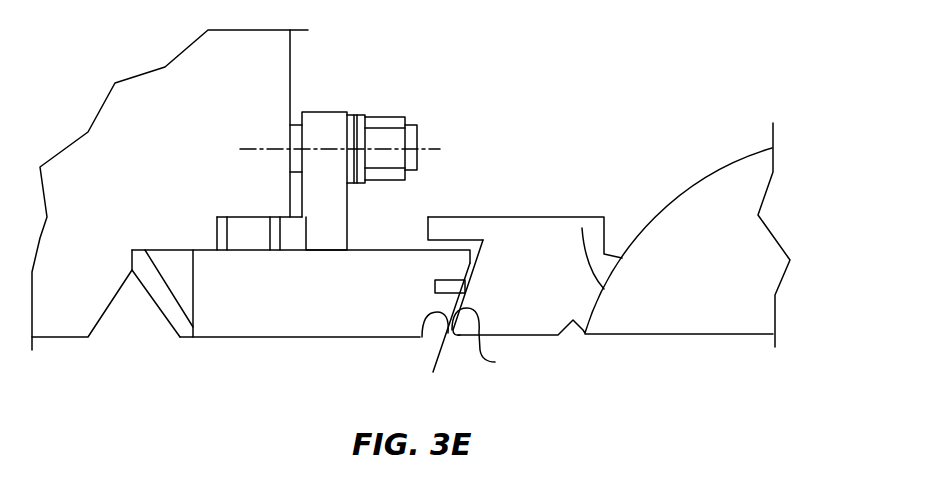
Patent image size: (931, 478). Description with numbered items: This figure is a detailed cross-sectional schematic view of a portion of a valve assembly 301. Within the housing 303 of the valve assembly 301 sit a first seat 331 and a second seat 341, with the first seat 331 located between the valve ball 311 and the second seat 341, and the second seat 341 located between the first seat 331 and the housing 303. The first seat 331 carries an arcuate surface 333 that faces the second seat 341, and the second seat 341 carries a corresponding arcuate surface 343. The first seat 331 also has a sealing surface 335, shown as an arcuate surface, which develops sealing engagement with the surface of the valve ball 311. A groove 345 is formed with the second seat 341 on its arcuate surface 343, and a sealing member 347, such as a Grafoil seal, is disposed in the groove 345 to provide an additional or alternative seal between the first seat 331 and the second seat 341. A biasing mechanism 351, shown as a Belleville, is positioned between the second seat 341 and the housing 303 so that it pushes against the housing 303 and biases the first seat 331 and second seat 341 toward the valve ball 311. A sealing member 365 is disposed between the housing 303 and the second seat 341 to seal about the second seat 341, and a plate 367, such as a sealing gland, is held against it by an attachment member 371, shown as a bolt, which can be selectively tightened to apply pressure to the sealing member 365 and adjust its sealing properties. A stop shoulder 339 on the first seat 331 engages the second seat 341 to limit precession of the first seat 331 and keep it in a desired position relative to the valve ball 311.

The valve assembly 301 is at (600, 92).
The housing 303 is at (194, 119).
The valve ball 311 is at (731, 280).
The first seat 331 is at (558, 280).
The arcuate surface 333 is at (495, 362).
The sealing surface 335 is at (582, 228).
The stop shoulder 339 is at (452, 223).
The second seat 341 is at (343, 307).
The arcuate surface 343 is at (433, 372).
The groove 345 is at (422, 337).
The sealing member 347 is at (436, 288).
The biasing mechanism 351 is at (165, 305).
The sealing member 365 is at (248, 223).
The plate 367 is at (323, 120).
The attachment member 371 is at (420, 138).